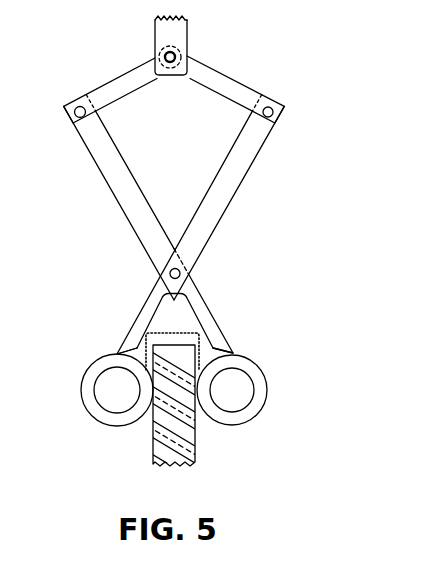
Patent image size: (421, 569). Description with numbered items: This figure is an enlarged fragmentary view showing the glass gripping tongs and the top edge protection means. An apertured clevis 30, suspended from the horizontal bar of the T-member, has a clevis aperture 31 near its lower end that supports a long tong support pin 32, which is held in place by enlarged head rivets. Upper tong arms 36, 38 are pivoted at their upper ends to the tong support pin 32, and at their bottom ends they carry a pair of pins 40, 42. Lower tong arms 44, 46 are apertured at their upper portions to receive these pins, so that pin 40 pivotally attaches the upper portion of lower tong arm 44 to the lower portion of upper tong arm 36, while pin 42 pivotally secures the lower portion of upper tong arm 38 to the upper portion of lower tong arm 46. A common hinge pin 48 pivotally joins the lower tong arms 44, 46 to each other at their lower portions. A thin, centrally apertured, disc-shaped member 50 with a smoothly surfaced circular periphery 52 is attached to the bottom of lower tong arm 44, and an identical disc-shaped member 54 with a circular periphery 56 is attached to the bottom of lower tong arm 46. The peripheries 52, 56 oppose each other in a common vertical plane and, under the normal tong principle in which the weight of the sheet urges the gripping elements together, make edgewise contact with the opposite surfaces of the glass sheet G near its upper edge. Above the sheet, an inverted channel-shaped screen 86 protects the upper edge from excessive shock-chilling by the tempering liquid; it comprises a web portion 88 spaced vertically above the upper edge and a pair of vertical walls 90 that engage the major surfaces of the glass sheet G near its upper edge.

The apertured clevis 30 is at (189, 31).
The clevis aperture 31 is at (164, 57).
The tong support pin 32 is at (165, 53).
The upper tong arm 36 is at (126, 86).
The upper tong arm 38 is at (218, 88).
The pin 40 is at (74, 112).
The pin 42 is at (274, 116).
The lower tong arm 44 is at (117, 194).
The lower tong arm 46 is at (231, 196).
The common hinge pin 48 is at (173, 268).
The disc-shaped member 50 is at (255, 372).
The circular periphery 52 is at (268, 388).
The disc-shaped member 54 is at (97, 362).
The circular periphery 56 is at (82, 382).
The inverted channel-shaped screen 86 is at (186, 324).
The web portion 88 is at (172, 338).
The vertical walls 90 is at (136, 346).
The glass sheet G is at (197, 447).